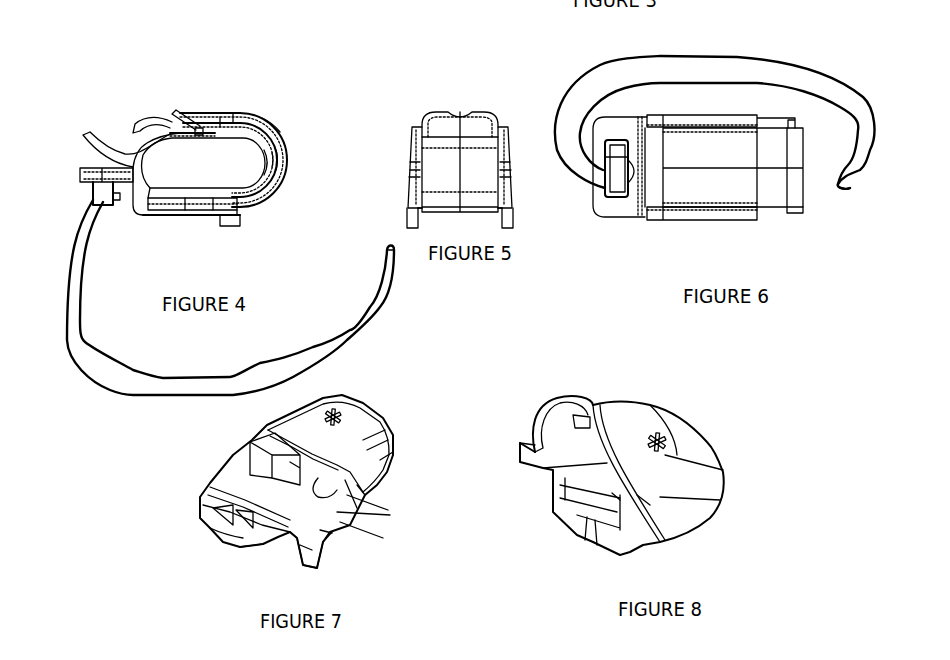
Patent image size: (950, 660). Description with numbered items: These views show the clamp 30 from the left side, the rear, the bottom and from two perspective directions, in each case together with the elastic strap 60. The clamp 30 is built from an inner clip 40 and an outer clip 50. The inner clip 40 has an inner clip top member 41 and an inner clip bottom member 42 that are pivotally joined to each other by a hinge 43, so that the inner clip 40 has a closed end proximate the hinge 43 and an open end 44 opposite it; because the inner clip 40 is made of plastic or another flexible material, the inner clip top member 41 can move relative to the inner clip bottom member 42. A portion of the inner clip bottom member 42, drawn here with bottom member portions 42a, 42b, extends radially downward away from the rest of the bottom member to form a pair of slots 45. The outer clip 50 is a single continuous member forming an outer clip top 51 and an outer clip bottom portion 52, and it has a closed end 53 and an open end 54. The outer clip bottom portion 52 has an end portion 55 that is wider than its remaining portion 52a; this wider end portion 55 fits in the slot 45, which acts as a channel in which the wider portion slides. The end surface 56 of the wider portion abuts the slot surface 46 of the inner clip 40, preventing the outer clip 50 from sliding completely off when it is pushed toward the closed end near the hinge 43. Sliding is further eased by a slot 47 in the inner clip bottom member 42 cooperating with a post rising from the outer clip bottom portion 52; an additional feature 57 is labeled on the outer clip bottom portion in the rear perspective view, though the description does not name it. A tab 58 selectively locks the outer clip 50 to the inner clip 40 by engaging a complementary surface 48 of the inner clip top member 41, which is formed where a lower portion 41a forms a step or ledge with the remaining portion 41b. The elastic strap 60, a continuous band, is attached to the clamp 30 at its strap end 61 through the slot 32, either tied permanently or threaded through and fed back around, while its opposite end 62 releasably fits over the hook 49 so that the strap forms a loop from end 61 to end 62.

In FIG. 5, the clamp 30 is at (407, 97).
In FIG. 6, the clamp 30 is at (830, 253).
In FIG. 7, the clamp 30 is at (175, 558).
In FIG. 8, the clamp 30 is at (735, 510).
In FIG. 4, the slot 32 is at (97, 193).
In FIG. 6, the slot 32 is at (613, 195).
In FIG. 7, the slot 32 is at (233, 543).
In FIG. 4, the inner clip 40 is at (254, 156).
In FIG. 5, the inner clip 40 is at (503, 132).
In FIG. 6, the inner clip 40 is at (780, 213).
In FIG. 7, the inner clip 40 is at (195, 497).
In FIG. 8, the inner clip 40 is at (533, 467).
In FIG. 4, the inner clip top member 41 is at (255, 145).
In FIG. 7, the inner clip top member 41 is at (227, 478).
In FIG. 4, the lower portion of inner clip top member 41a is at (193, 136).
In FIG. 4, the remaining portion of inner clip top member 41b is at (233, 112).
In FIG. 4, the inner clip bottom member 42 is at (280, 187).
In FIG. 7, the inner clip bottom member 42 is at (210, 507).
In FIG. 5, the inner clip bottom member portion 42a is at (513, 226).
In FIG. 6, the inner clip bottom member portion 42a is at (713, 218).
In FIG. 5, the inner clip bottom member portion 42b is at (413, 222).
In FIG. 6, the inner clip bottom member portion 42b is at (713, 117).
In FIG. 7, the inner clip bottom member portion 42b is at (360, 532).
In FIG. 8, the inner clip bottom member portion 42b is at (573, 528).
In FIG. 4, the hinge 43 is at (283, 160).
In FIG. 7, the hinge 43 is at (387, 467).
In FIG. 4, the open end 44 is at (80, 157).
In FIG. 7, the open end 44 is at (258, 527).
In FIG. 8, the open end 44 is at (527, 420).
In FIG. 4, the slots 45 is at (223, 226).
In FIG. 5, the slots 45 is at (422, 220).
In FIG. 7, the slots 45 is at (313, 540).
In FIG. 8, the slots 45 is at (568, 508).
In FIG. 7, the slot surface 46 is at (350, 512).
In FIG. 4, the slot 47 is at (243, 211).
In FIG. 7, the slot 47 is at (320, 490).
In FIG. 8, the slot 47 is at (643, 500).
In FIG. 4, the complementary surface 48 is at (220, 118).
In FIG. 4, the hook 49 is at (153, 118).
In FIG. 7, the hook 49 is at (277, 452).
In FIG. 4, the outer clip 50 is at (288, 128).
In FIG. 5, the outer clip 50 is at (480, 125).
In FIG. 6, the outer clip 50 is at (780, 189).
In FIG. 7, the outer clip 50 is at (362, 422).
In FIG. 8, the outer clip 50 is at (697, 452).
In FIG. 4, the outer clip top 51 is at (273, 120).
In FIG. 4, the outer clip bottom portion 52 is at (247, 203).
In FIG. 4, the remaining portion of outer clip bottom portion 52a is at (213, 210).
In FIG. 7, the remaining portion of outer clip bottom portion 52a is at (367, 523).
In FIG. 8, the remaining portion of outer clip bottom portion 52a is at (595, 520).
In FIG. 4, the closed end 53 is at (282, 168).
In FIG. 4, the open end 54 is at (193, 122).
In FIG. 4, the end portion 55 is at (163, 203).
In FIG. 7, the end portion 55 is at (320, 533).
In FIG. 8, the end portion 55 is at (578, 512).
In FIG. 4, the end surface 56 is at (188, 210).
In FIG. 7, the end surface 56 is at (332, 530).
In FIG. 8, the end surface 56 is at (587, 517).
In FIG. 8, the stop 57 is at (617, 493).
In FIG. 4, the tab 58 is at (202, 135).
In FIG. 4, the elastic strap 60 is at (113, 390).
In FIG. 6, the elastic strap 60 is at (806, 60).
In FIG. 4, the strap end 61 is at (117, 209).
In FIG. 6, the strap end 61 is at (637, 192).
In FIG. 4, the opposite end of strap 62 is at (373, 260).
In FIG. 6, the opposite end of strap 62 is at (850, 188).